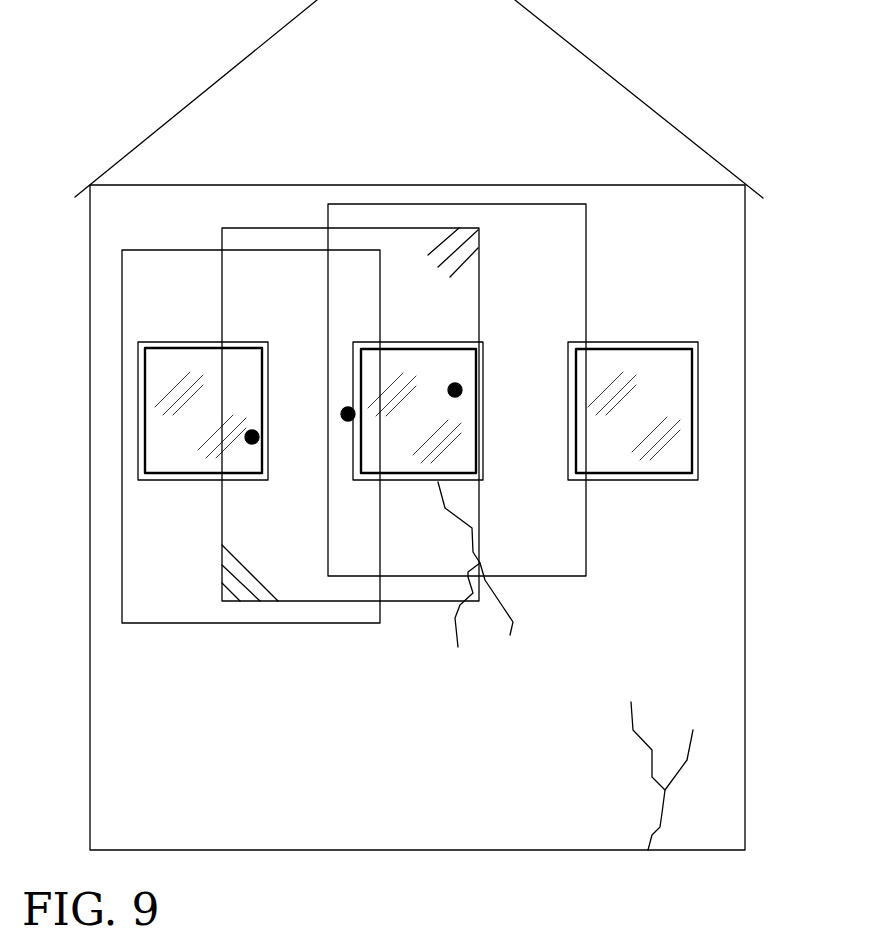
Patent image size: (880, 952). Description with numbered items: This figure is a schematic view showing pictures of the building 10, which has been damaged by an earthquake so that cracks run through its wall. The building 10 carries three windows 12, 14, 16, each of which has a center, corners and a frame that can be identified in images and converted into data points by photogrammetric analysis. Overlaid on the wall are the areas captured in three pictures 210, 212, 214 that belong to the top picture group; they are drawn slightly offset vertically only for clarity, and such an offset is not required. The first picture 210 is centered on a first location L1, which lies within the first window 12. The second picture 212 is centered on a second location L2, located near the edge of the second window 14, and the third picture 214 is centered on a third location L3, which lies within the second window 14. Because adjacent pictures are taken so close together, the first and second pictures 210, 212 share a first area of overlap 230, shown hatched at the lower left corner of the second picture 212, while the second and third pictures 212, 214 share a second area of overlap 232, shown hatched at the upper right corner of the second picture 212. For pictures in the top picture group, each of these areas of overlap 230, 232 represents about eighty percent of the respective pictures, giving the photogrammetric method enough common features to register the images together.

The building 10 is at (238, 107).
The window 12 is at (158, 343).
The window 14 is at (414, 343).
The window 16 is at (683, 343).
The first picture 210 is at (219, 623).
The second picture 212 is at (255, 228).
The third picture 214 is at (550, 204).
The first area of overlap 230 is at (262, 593).
The second area of overlap 232 is at (453, 240).
The first location L1 is at (244, 438).
The second location L2 is at (342, 413).
The third location L3 is at (462, 390).